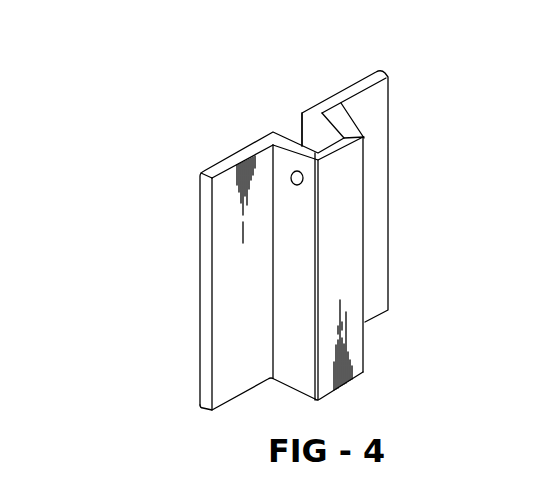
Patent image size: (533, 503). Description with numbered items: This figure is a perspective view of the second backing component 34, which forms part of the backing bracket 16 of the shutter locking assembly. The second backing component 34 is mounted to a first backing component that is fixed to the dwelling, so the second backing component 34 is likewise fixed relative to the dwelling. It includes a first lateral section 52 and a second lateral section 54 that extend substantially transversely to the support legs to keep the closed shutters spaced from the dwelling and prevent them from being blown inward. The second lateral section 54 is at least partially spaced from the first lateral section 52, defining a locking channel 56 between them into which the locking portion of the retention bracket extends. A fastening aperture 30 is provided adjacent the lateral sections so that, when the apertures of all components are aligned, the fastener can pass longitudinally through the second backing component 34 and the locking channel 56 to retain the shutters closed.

The backing bracket 16 is at (202, 232).
The fastening aperture 30 is at (291, 178).
The second backing component 34 is at (402, 174).
The first lateral section 52 is at (247, 295).
The second lateral section 54 is at (372, 252).
The locking channel 56 is at (300, 125).